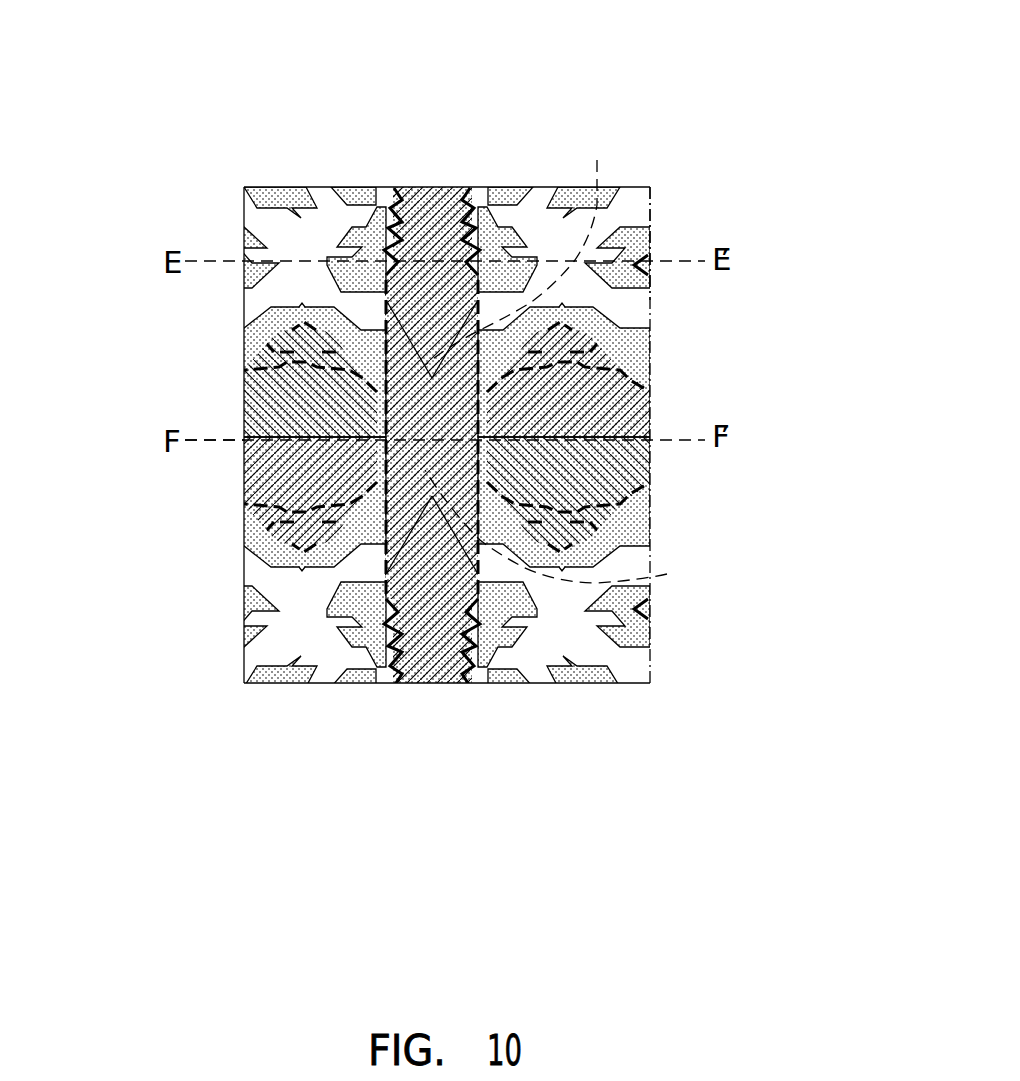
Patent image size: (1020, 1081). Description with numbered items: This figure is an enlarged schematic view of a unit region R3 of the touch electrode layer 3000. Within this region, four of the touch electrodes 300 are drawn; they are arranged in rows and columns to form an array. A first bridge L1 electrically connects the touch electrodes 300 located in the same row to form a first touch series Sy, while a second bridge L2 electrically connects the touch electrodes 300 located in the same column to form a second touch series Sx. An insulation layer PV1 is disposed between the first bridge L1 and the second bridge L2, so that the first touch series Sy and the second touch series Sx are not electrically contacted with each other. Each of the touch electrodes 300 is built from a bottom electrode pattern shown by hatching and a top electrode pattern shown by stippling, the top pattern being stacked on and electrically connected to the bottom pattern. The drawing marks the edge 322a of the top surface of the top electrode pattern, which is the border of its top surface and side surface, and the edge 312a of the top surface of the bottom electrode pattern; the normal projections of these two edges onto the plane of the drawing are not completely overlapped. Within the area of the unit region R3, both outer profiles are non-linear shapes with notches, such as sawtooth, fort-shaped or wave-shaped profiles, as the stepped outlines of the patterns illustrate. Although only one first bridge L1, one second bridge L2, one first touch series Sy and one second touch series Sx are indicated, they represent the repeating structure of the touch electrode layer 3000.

The touch electrode 300 is at (165, 317).
The edge of the top surface of the top electrode pattern 322a is at (338, 200).
The edge of the top surface of the bottom electrode pattern 312a is at (377, 208).
The insulation layer PV1 is at (345, 192).
The first bridge L1 is at (516, 245).
The second bridge L2 is at (561, 530).
The region R3 is at (652, 200).
The second touch series Sx is at (132, 416).
The first touch series Sy is at (415, 112).
The touch electrode layer 3000 is at (792, 855).